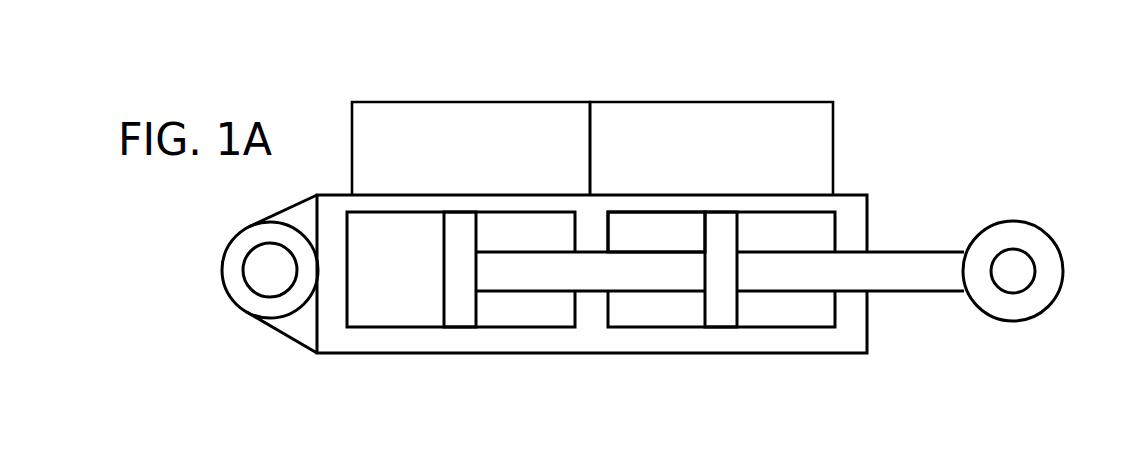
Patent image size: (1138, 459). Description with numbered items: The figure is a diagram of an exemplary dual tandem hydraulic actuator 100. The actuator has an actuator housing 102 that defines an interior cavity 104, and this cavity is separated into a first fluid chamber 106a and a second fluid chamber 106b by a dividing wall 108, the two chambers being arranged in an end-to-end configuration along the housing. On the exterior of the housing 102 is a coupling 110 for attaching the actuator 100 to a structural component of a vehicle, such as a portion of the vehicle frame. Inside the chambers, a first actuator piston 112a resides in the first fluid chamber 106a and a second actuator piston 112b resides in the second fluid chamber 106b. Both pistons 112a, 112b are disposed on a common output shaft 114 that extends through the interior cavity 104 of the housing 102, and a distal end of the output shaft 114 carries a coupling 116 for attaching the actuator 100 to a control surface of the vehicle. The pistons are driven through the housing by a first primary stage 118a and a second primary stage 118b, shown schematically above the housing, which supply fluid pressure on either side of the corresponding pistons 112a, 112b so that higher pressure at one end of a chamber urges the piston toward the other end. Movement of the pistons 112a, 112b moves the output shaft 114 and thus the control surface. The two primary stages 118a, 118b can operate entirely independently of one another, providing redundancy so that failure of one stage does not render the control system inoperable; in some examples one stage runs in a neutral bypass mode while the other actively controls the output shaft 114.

The hydraulic actuator 100 is at (1012, 132).
The actuator housing 102 is at (866, 180).
The interior cavity 104 is at (812, 318).
The first fluid chamber 106a is at (683, 243).
The second fluid chamber 106b is at (549, 243).
The dividing wall 108 is at (577, 302).
The coupling 110 is at (233, 297).
The first actuator piston 112a is at (722, 329).
The second actuator piston 112b is at (455, 329).
The output shaft 114 is at (920, 293).
The coupling 116 is at (1046, 242).
The first primary stage 118a is at (718, 118).
The second primary stage 118b is at (485, 115).